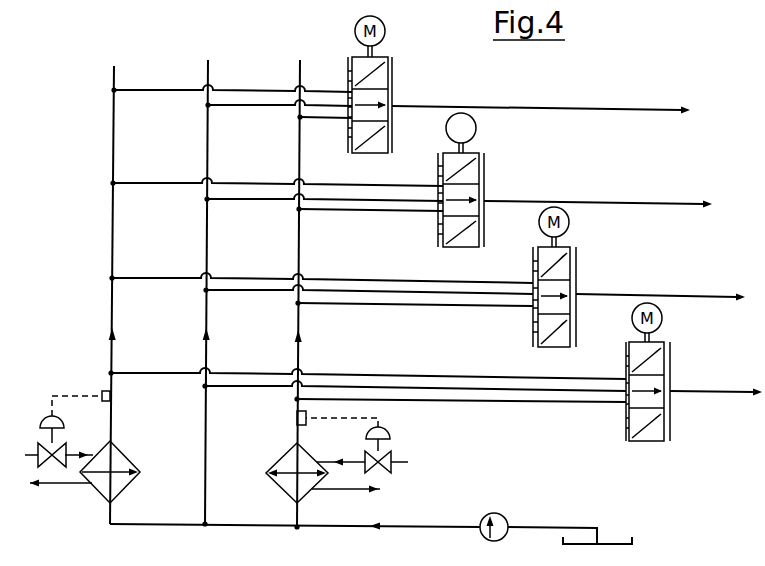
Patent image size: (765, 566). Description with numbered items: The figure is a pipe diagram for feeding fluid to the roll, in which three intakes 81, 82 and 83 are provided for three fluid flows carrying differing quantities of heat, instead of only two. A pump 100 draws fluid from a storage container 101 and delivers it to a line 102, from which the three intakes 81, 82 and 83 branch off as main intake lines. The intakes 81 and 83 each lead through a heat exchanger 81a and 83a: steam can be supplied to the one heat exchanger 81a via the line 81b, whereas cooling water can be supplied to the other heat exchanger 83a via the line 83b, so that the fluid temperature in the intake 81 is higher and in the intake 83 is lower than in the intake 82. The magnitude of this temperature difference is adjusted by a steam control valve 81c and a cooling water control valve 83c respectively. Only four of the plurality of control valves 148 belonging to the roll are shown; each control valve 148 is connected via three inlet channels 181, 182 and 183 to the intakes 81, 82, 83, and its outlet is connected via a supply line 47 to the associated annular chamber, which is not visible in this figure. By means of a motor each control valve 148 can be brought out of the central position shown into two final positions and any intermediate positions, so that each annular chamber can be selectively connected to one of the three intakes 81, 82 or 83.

The supply line 47 is at (670, 207).
The intake 81 is at (112, 421).
The heat exchanger 81a is at (120, 480).
The line 81b is at (66, 455).
The steam control valve 81c is at (39, 416).
The intake 82 is at (206, 438).
The intake 83 is at (300, 356).
The heat exchanger 83a is at (290, 487).
The line 83b is at (403, 462).
The cooling water control valve 83c is at (385, 463).
The pump 100 is at (505, 515).
The storage container 101 is at (636, 541).
The line 102 is at (409, 527).
The control valve 148 is at (575, 256).
The inlet channel 181 is at (326, 184).
The inlet channel 182 is at (325, 211).
The inlet channel 183 is at (383, 213).